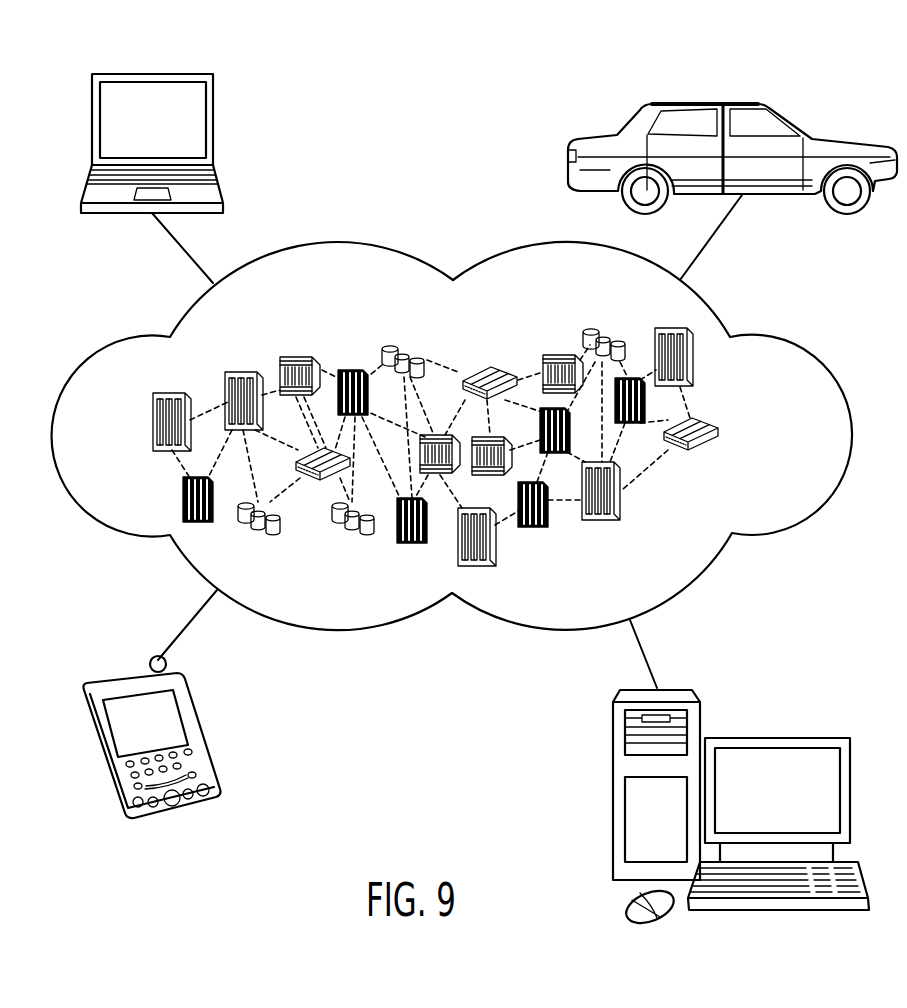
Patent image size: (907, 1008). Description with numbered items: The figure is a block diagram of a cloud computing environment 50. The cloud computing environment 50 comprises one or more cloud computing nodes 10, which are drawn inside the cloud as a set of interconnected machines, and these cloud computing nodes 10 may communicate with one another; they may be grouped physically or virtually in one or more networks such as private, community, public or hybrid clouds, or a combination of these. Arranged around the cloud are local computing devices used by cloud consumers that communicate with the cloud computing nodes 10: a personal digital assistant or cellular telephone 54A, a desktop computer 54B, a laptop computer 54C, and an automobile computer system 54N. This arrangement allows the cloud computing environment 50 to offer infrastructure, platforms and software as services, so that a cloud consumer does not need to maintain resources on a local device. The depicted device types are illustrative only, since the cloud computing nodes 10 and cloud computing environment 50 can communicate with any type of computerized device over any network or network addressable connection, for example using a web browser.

The cloud computing node 10 is at (740, 433).
The cloud computing environment 50 is at (791, 345).
The personal digital assistant or cellular telephone 54A is at (132, 673).
The desktop computer 54B is at (780, 735).
The laptop computer 54C is at (152, 72).
The automobile computer system 54N is at (713, 102).